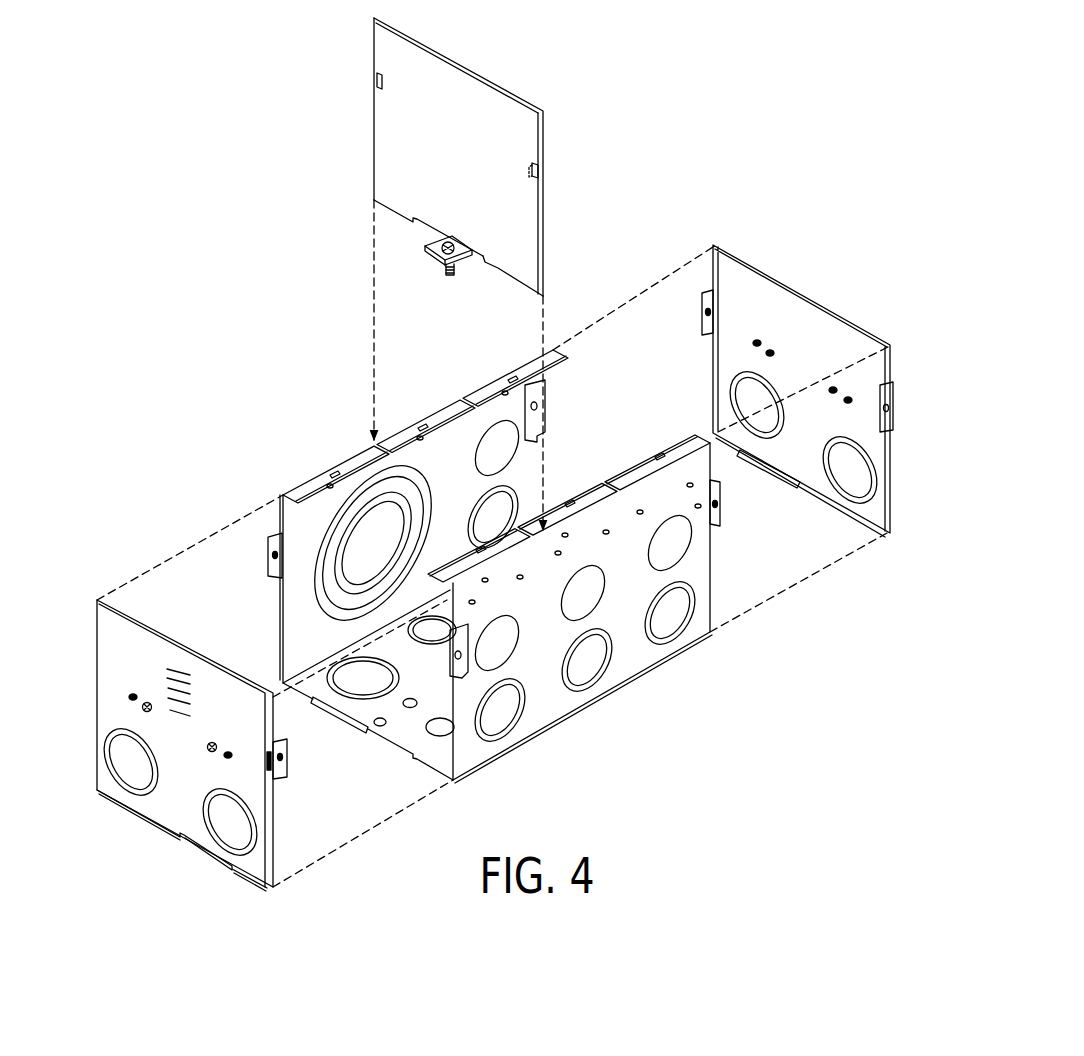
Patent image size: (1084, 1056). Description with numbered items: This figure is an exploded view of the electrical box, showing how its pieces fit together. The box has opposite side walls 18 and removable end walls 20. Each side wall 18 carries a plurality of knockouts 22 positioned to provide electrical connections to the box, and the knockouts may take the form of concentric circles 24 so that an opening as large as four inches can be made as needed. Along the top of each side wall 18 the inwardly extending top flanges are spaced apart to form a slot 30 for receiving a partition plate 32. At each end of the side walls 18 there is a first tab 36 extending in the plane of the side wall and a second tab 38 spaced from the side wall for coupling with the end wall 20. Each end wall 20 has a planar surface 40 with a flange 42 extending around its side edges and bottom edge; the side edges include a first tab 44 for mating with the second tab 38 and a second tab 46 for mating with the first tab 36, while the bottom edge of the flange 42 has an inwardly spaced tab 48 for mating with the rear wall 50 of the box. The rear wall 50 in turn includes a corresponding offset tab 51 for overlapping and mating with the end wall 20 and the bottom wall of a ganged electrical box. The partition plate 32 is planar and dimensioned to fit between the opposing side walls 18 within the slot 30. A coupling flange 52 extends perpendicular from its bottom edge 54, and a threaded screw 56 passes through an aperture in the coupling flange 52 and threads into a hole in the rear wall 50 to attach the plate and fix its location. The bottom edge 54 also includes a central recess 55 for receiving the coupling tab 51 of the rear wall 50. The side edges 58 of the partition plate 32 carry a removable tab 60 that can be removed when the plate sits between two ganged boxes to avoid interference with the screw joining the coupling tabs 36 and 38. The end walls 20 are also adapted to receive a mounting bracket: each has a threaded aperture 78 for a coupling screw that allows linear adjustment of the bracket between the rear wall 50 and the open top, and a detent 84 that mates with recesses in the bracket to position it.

The side wall 18 is at (540, 577).
The end wall 20 is at (493, 558).
The knockout 22 is at (475, 596).
The concentric circles 24 is at (362, 577).
The slot 30 is at (462, 400).
The partition plate 32 is at (504, 274).
The first tab 36 is at (268, 540).
The second tab 38 is at (545, 388).
The planar surface 40 is at (185, 672).
The flange 42 is at (708, 277).
The first tab 44 is at (710, 332).
The second tab 46 is at (878, 420).
The inwardly spaced tab 48 is at (785, 490).
The rear wall 50 is at (364, 730).
The offset tab 51 is at (350, 715).
The coupling flange 52 is at (432, 252).
The bottom edge 54 is at (388, 213).
The central recess 55 is at (483, 260).
The threaded screw 56 is at (450, 277).
The side edges 58 is at (374, 133).
The removable tab 60 is at (376, 80).
The aperture 78 is at (133, 697).
The detent 84 is at (147, 703).